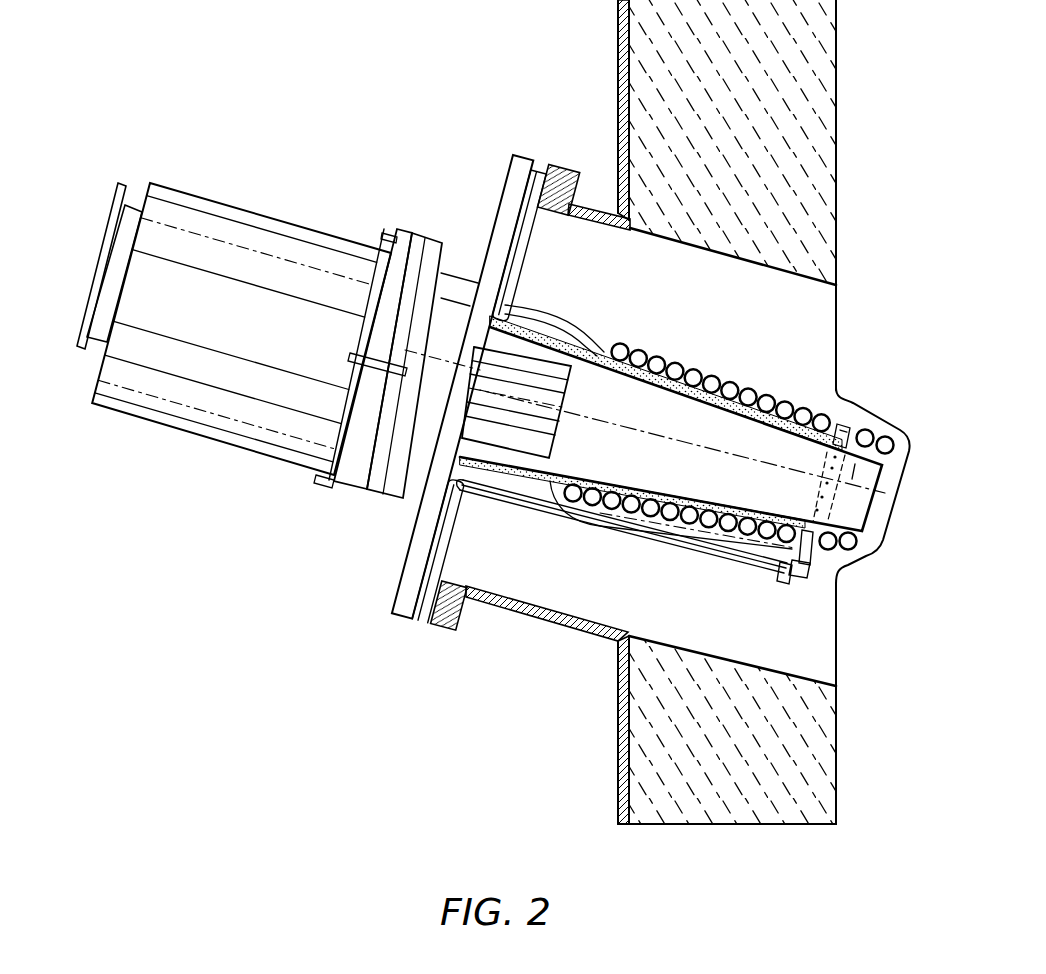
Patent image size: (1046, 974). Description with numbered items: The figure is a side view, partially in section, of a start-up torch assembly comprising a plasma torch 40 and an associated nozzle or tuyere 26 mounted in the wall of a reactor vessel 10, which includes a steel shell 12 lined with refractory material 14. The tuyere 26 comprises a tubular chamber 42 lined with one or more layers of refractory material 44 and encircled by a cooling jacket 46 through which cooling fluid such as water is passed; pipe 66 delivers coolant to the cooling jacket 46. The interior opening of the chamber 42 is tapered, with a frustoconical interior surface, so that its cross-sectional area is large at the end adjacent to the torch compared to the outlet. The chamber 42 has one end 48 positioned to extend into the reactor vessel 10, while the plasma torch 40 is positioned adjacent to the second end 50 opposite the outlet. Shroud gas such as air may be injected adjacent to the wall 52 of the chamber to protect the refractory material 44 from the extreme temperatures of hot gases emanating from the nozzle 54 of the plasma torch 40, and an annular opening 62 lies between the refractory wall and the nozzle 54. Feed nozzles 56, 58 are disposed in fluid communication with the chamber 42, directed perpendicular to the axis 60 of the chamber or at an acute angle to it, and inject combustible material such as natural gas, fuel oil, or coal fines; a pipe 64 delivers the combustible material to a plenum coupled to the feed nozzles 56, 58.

The reactor vessel 10 is at (815, 161).
The steel shell 12 is at (618, 78).
The refractory material 14 is at (818, 94).
The tuyere 26 is at (760, 445).
The plasma torch 40 is at (205, 432).
The tubular chamber 42 is at (675, 473).
The refractory material 44 is at (645, 385).
The cooling jacket 46 is at (672, 372).
The end 48 is at (905, 450).
The second end 50 is at (467, 445).
The wall 52 is at (530, 462).
The nozzle 54 is at (557, 434).
The feed nozzle 56 is at (852, 478).
The feed nozzle 58 is at (821, 538).
The axis 60 is at (688, 447).
The annular opening 62 is at (497, 452).
The pipe 64 is at (733, 567).
The pipe 66 is at (527, 250).